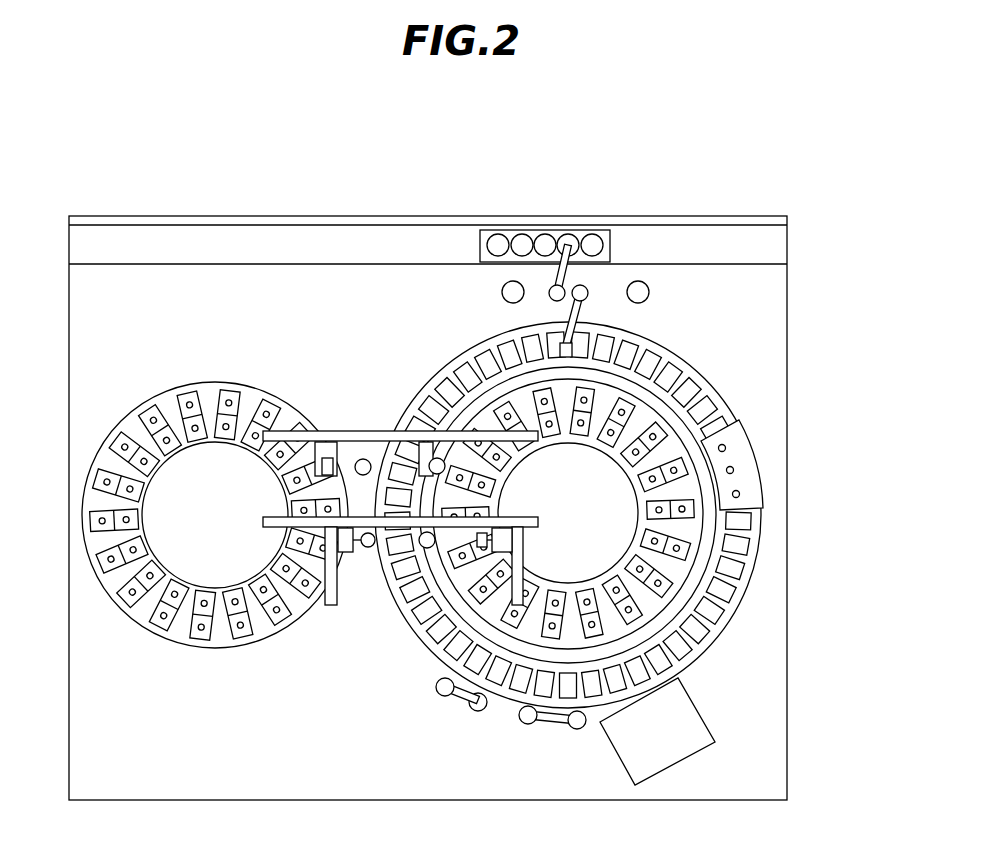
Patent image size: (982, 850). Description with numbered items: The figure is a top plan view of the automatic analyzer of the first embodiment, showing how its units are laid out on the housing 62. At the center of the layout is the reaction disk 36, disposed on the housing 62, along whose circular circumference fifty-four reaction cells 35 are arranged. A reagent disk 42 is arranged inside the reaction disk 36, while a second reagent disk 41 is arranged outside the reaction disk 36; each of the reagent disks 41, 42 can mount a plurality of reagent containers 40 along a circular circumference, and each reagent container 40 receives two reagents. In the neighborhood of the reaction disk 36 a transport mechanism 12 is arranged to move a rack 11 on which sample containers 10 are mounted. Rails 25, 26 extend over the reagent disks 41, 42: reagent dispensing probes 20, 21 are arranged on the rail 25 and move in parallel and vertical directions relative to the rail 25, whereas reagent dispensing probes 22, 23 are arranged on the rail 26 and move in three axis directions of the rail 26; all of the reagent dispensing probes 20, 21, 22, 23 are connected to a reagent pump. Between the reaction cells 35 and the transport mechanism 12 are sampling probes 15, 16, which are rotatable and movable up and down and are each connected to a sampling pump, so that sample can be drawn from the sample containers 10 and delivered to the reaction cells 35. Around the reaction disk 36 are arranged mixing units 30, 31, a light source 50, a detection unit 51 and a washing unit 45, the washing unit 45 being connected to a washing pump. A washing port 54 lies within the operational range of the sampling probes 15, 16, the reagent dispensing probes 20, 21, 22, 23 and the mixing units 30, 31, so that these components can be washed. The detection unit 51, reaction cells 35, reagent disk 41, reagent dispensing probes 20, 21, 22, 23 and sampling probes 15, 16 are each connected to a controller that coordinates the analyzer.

The sample container 10 is at (568, 236).
The rack 11 is at (472, 240).
The transport mechanism 12 is at (426, 218).
The sampling probe 15 is at (551, 297).
The sampling probe 16 is at (584, 294).
The reagent dispensing probe 20 is at (325, 462).
The reagent dispensing probe 21 is at (422, 456).
The reagent dispensing probe 22 is at (360, 555).
The reagent dispensing probe 23 is at (442, 568).
The rail 25 is at (287, 431).
The rail 26 is at (275, 522).
The mixing unit 30 is at (440, 697).
The mixing unit 31 is at (530, 726).
The reaction cell 35 is at (730, 615).
The reaction disk 36 is at (433, 657).
The reagent container 40 is at (195, 442).
The reagent disk 41 is at (216, 382).
The reagent disk 42 is at (622, 473).
The washing unit 45 is at (762, 455).
The light source 50 is at (640, 635).
The detection unit 51 is at (693, 745).
The washing port 54 is at (650, 291).
The housing 62 is at (787, 572).